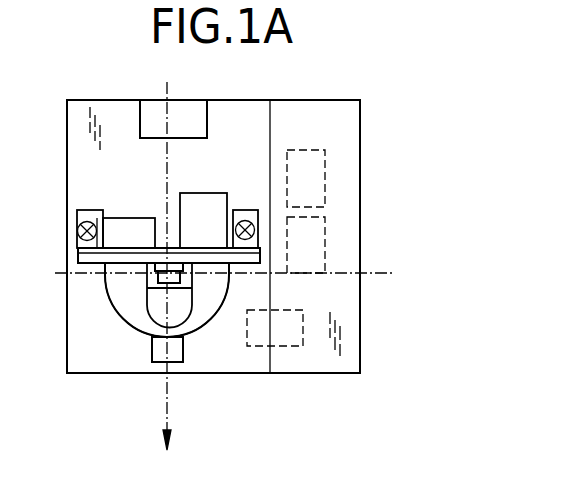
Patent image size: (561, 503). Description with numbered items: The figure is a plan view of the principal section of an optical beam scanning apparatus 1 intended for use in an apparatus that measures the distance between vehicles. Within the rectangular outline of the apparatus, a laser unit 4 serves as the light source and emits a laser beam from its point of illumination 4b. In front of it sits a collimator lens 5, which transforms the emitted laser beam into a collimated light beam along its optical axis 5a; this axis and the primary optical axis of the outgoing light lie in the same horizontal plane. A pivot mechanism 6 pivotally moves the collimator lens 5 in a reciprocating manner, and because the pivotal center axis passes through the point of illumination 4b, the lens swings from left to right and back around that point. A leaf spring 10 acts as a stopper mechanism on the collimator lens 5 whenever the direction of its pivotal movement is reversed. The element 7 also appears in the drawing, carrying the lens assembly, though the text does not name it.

The optical beam scanning apparatus 1 is at (370, 100).
The laser unit 4 is at (226, 280).
The point of illumination 4b is at (167, 268).
The collimator lens 5 is at (173, 310).
The optical axis 5a is at (167, 400).
The pivot mechanism 6 is at (97, 348).
The table 7 is at (252, 258).
The leaf spring 10 is at (105, 285).